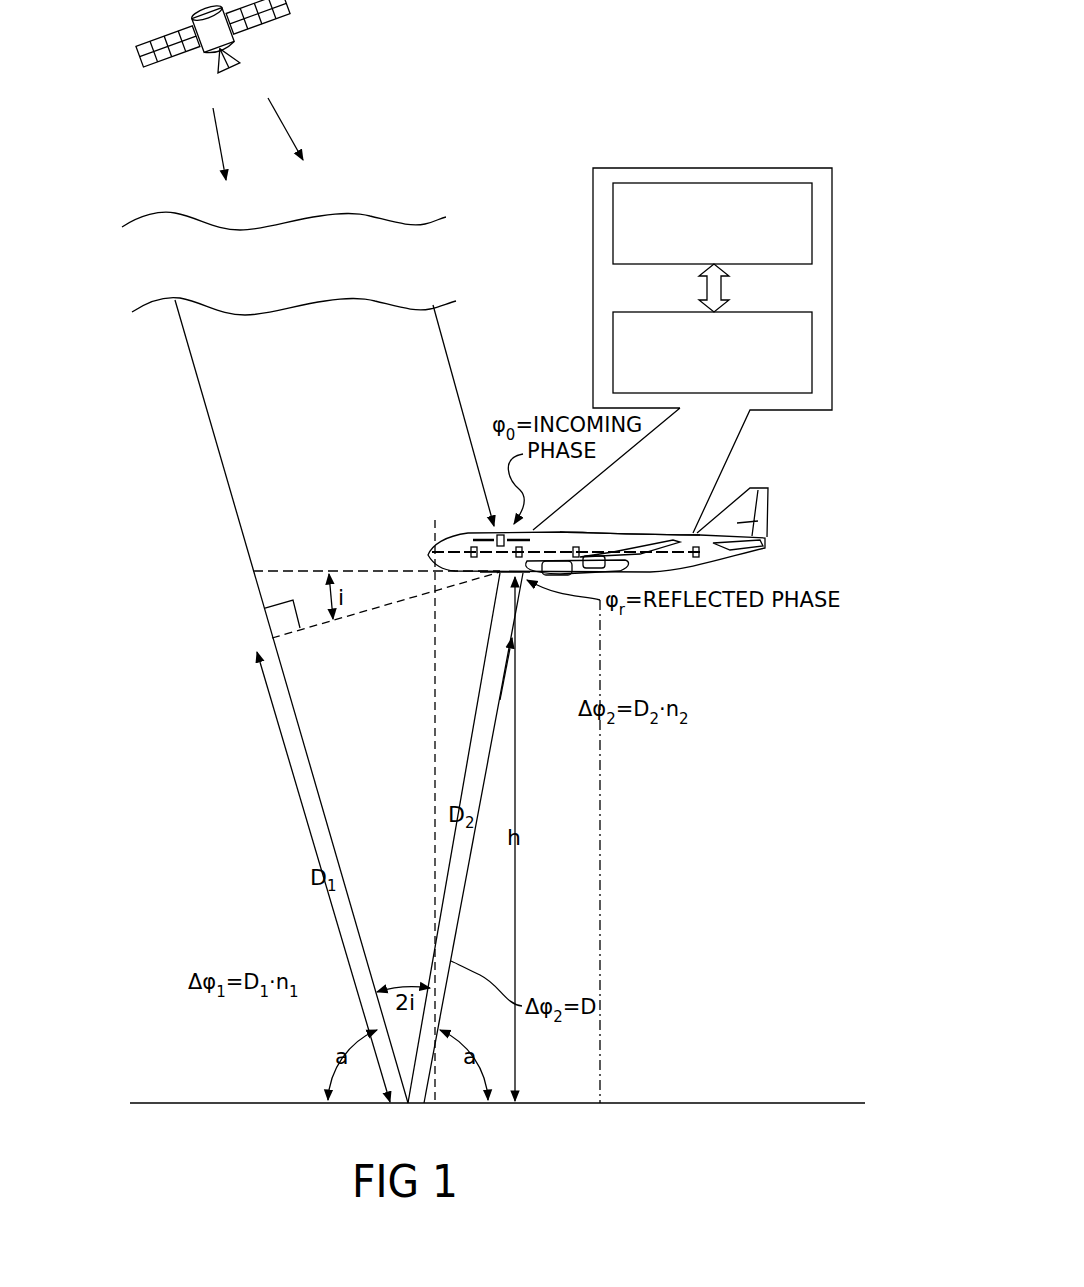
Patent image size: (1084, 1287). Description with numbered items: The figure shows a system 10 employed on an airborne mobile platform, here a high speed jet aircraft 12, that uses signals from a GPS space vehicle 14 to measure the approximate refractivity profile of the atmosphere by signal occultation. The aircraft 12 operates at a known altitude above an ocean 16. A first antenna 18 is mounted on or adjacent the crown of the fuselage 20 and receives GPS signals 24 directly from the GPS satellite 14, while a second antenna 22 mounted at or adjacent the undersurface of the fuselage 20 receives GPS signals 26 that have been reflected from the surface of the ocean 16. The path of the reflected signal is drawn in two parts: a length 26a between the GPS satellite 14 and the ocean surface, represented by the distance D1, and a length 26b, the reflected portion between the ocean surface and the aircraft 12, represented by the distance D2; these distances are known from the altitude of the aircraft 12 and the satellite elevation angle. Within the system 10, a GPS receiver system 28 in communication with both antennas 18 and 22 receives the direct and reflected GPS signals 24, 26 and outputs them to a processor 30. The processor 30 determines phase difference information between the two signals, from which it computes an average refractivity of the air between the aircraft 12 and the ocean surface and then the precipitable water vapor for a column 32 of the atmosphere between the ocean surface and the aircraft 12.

The system 10 is at (682, 307).
The jet aircraft 12 is at (786, 494).
The GPS space vehicle 14 is at (228, 36).
The ocean 16 is at (300, 1102).
The first antenna 18 is at (508, 527).
The fuselage 20 is at (643, 533).
The second antenna 22 is at (500, 578).
The direct GPS signals 24 is at (290, 121).
The reflected GPS signals 26 is at (215, 146).
The length 26a is at (300, 712).
The length 26b is at (460, 906).
The GPS receiver system 28 is at (676, 322).
The processor 30 is at (742, 258).
The column 32 is at (603, 828).